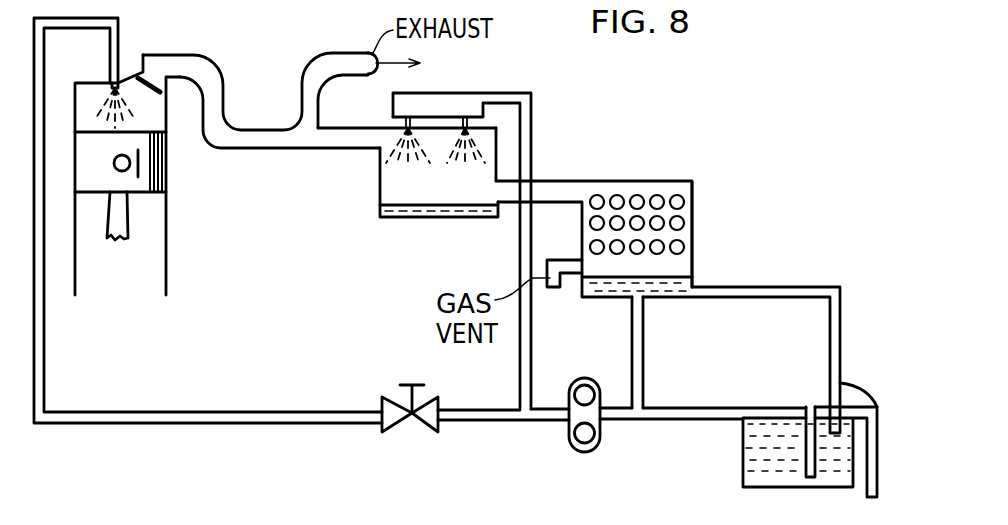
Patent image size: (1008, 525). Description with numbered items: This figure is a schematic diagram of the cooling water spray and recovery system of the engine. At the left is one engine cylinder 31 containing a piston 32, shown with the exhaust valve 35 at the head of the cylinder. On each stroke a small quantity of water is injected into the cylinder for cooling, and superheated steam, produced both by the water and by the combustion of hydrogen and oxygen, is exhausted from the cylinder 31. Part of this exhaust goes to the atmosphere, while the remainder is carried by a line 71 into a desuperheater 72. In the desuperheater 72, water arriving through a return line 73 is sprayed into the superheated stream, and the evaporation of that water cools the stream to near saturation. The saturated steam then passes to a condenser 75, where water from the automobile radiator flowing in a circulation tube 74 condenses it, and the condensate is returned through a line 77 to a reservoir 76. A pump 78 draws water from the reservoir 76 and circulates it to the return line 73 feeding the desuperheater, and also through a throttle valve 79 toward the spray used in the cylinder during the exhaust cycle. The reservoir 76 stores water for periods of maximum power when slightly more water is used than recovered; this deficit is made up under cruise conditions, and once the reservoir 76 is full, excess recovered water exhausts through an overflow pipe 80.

The engine cylinder 31 is at (153, 113).
The piston 32 is at (140, 175).
The exhaust valve 35 is at (147, 80).
The line 71 is at (337, 140).
The desuperheater 72 is at (380, 195).
The return line 73 is at (531, 120).
The circulation tube 74 is at (680, 224).
The condenser 75 is at (682, 262).
The reservoir 76 is at (743, 456).
The line 77 is at (797, 285).
The pump 78 is at (573, 442).
The throttle valve 79 is at (423, 420).
The overflow pipe 80 is at (834, 382).